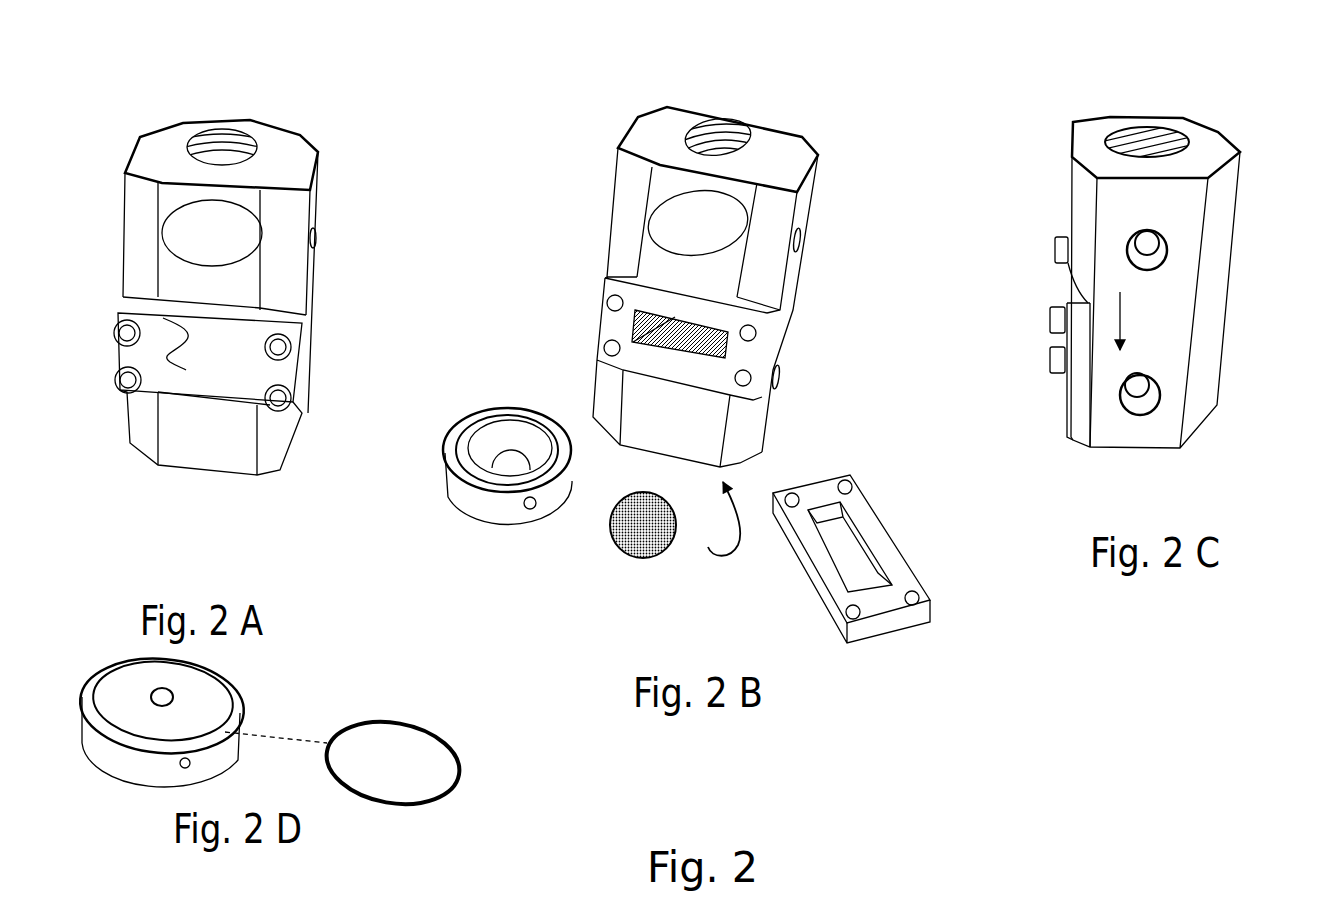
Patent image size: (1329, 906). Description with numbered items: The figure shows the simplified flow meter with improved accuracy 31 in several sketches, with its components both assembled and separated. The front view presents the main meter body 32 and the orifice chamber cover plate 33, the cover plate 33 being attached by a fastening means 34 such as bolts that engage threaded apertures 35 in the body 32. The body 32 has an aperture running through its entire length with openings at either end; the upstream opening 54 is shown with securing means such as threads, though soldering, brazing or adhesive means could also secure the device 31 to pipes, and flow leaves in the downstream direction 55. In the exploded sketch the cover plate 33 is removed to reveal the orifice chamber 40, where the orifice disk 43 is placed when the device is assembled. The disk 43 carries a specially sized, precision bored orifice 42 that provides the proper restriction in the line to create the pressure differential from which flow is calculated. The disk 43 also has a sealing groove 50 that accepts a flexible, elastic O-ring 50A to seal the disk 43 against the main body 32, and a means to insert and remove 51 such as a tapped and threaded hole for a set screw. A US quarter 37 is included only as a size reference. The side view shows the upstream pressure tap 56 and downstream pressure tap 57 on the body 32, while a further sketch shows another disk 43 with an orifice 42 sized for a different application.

In FIG. 2A, the simplified flow meter with improved accuracy 31 is at (208, 313).
In FIG. 2B, the simplified flow meter with improved accuracy 31 is at (668, 382).
In FIG. 2C, the simplified flow meter with improved accuracy 31 is at (1130, 299).
In FIG. 2A, the meter body 32 is at (150, 220).
In FIG. 2B, the meter body 32 is at (705, 287).
In FIG. 2C, the meter body 32 is at (1180, 203).
In FIG. 2A, the orifice chamber cover plate 33 is at (170, 348).
In FIG. 2B, the orifice chamber cover plate 33 is at (871, 591).
In FIG. 2C, the orifice chamber cover plate 33 is at (1068, 378).
In FIG. 2A, the fastening means 34 is at (278, 398).
In FIG. 2C, the fastening means 34 is at (1050, 358).
In FIG. 2B, the threaded aperture 35 is at (607, 342).
In FIG. 2B, the reference item for size 37 is at (623, 557).
In FIG. 2B, the orifice chamber 40 is at (687, 333).
In FIG. 2B, the orifice 42 is at (512, 467).
In FIG. 2D, the orifice 42 is at (163, 698).
In FIG. 2B, the orifice disk 43 is at (495, 505).
In FIG. 2D, the orifice disk 43 is at (292, 729).
In FIG. 2B, the sealing means 50 is at (471, 471).
In FIG. 2D, the sealing means 50 is at (100, 715).
In FIG. 2D, the O-ring 50A is at (462, 793).
In FIG. 2B, the means to insert/remove 51 is at (532, 505).
In FIG. 2D, the means to insert/remove 51 is at (183, 763).
In FIG. 2A, the upstream flow 54 is at (237, 148).
In FIG. 2B, the upstream flow 54 is at (718, 138).
In FIG. 2C, the upstream flow 54 is at (1147, 138).
In FIG. 2B, the downstream flow 55 is at (710, 550).
In FIG. 2B, the upstream pressure tap 56 is at (802, 240).
In FIG. 2C, the upstream pressure tap 56 is at (1157, 252).
In FIG. 2B, the downstream pressure tap 57 is at (780, 377).
In FIG. 2C, the downstream pressure tap 57 is at (1145, 402).